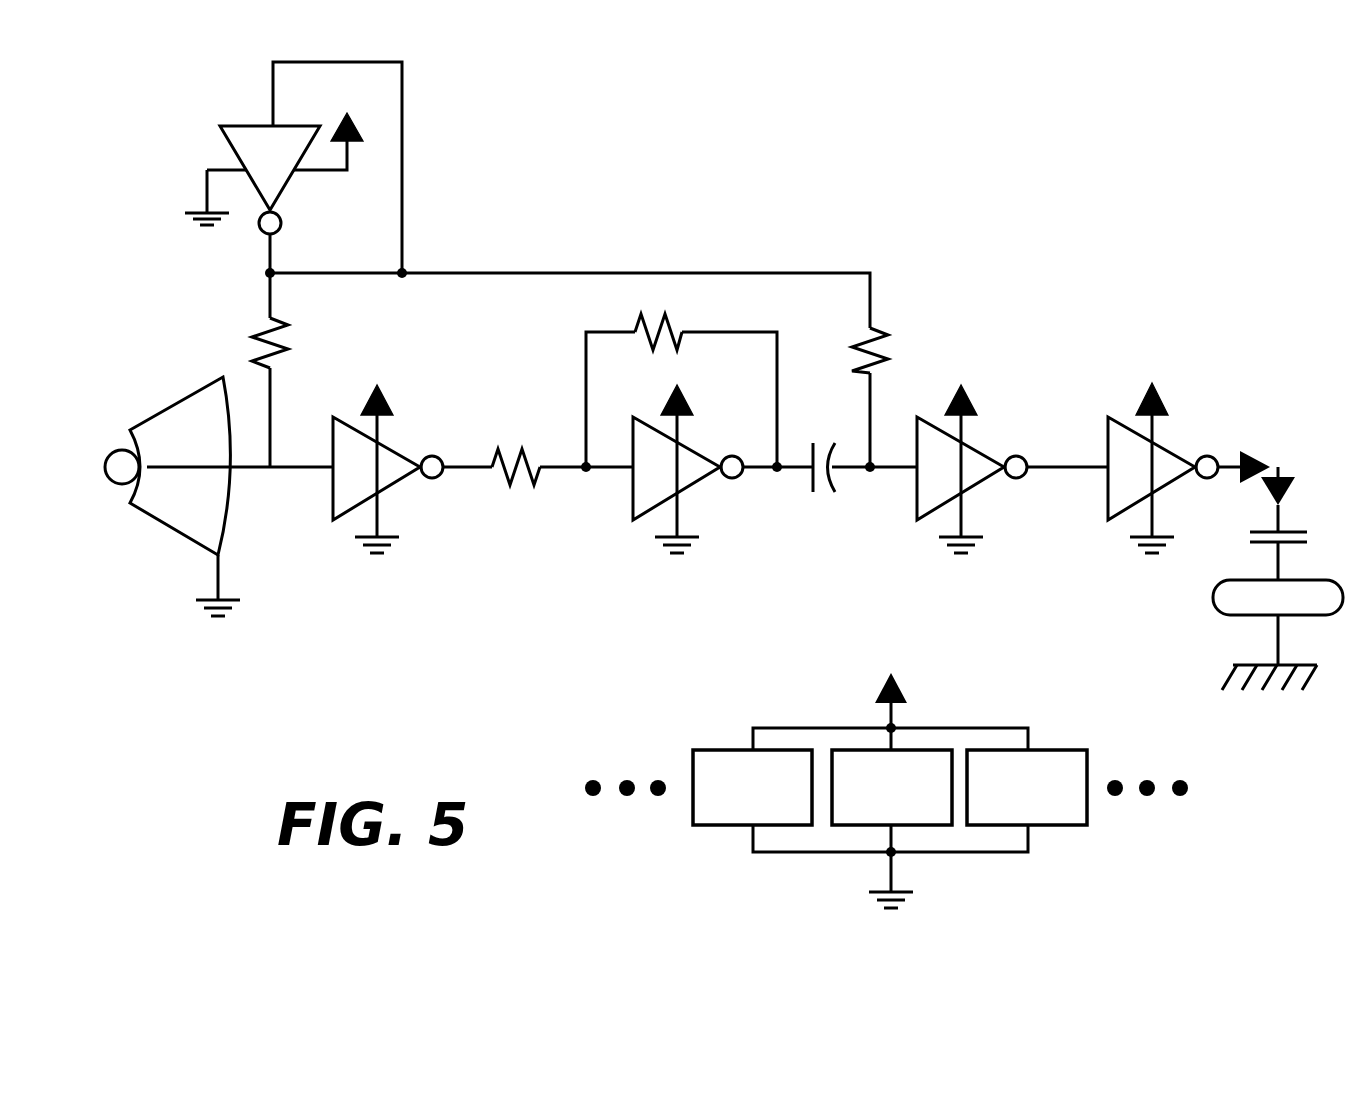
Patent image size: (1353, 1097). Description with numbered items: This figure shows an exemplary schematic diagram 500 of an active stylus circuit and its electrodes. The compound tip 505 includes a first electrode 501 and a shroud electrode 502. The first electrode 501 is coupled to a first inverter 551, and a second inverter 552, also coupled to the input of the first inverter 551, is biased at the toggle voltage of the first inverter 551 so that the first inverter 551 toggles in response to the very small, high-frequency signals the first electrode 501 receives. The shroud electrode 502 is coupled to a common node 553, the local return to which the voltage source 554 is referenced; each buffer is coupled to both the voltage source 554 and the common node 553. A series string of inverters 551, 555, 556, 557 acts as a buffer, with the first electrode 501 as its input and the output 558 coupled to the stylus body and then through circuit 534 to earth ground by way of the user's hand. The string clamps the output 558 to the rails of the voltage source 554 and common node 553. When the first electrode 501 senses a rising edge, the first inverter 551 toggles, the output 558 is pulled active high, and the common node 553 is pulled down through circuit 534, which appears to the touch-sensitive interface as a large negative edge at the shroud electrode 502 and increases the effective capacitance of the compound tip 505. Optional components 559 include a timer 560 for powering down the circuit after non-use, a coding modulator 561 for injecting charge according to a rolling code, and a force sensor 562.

The schematic diagram 500 is at (977, 268).
The compound tip 505 is at (167, 455).
The first electrode 501 is at (117, 470).
The shroud electrode 502 is at (128, 403).
The first inverter 551 is at (345, 483).
The second inverter 552 is at (248, 140).
The common node 553 is at (185, 215).
The voltage source 554 is at (355, 136).
The inverter 555 is at (643, 490).
The inverter 556 is at (930, 483).
The inverter 557 is at (1120, 483).
The output 558 is at (1225, 455).
The circuit 534 is at (1186, 587).
The optional components 559 is at (513, 767).
The timer 560 is at (727, 767).
The coding modulator 561 is at (848, 765).
The force sensor 562 is at (1052, 760).